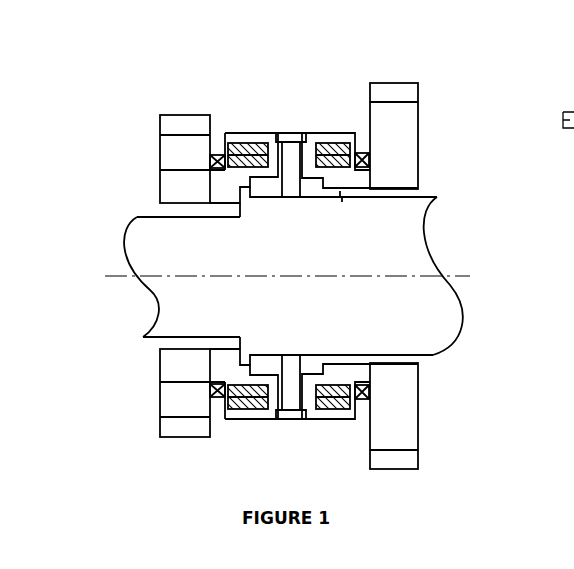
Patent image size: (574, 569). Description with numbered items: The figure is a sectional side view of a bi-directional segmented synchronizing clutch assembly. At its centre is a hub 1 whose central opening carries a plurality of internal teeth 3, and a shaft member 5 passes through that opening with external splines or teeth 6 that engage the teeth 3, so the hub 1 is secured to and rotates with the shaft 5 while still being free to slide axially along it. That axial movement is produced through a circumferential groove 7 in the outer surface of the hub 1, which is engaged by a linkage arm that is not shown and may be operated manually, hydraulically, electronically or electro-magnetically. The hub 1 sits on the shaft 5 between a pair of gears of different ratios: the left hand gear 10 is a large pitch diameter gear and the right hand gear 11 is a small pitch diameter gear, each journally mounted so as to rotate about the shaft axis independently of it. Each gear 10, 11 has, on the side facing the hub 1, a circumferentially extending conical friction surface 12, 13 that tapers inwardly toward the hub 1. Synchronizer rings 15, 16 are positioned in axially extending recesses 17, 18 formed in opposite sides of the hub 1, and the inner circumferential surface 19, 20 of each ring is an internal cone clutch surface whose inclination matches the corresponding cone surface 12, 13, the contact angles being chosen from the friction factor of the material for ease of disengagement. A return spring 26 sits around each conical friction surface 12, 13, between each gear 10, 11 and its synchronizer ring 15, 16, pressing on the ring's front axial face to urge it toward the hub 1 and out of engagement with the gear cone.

The hub 1 is at (291, 397).
The teeth 3 is at (295, 196).
The shaft member 5 is at (166, 325).
The external splines or teeth 6 is at (317, 197).
The circumferential groove 7 is at (287, 137).
The left hand gear 10 is at (166, 147).
The right hand gear 11 is at (386, 145).
The conical friction surface 12 is at (258, 388).
The conical friction surface 13 is at (330, 385).
The synchronizer ring 15 is at (235, 133).
The synchronizer ring 16 is at (329, 160).
The axially extending recess 17 is at (268, 400).
The axially extending recess 18 is at (307, 400).
The inner circumferential surface 19 is at (248, 160).
The inner circumferential surface 20 is at (330, 386).
The return spring 26 is at (357, 155).